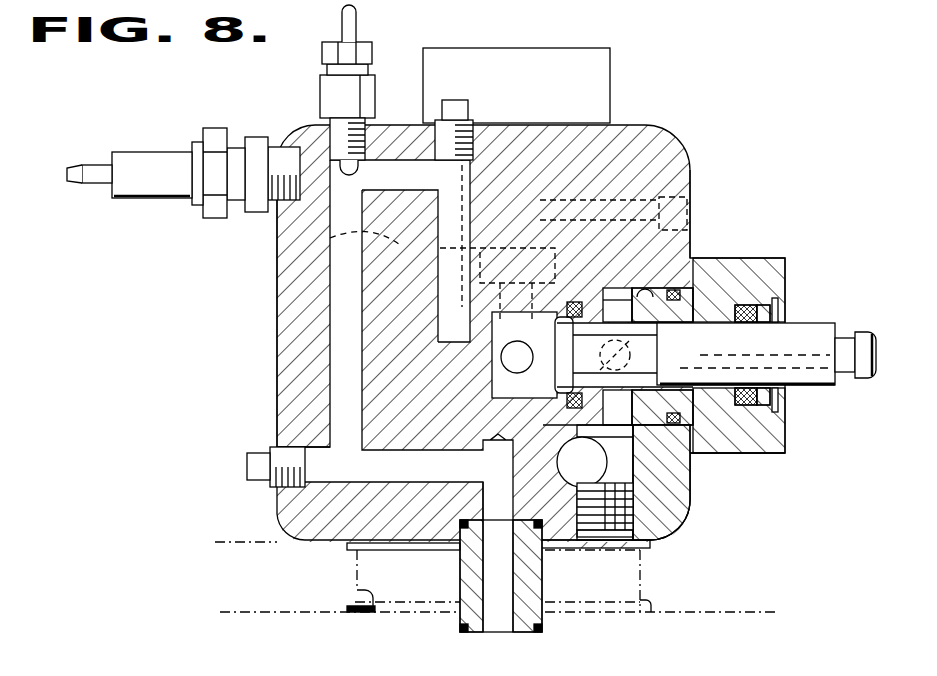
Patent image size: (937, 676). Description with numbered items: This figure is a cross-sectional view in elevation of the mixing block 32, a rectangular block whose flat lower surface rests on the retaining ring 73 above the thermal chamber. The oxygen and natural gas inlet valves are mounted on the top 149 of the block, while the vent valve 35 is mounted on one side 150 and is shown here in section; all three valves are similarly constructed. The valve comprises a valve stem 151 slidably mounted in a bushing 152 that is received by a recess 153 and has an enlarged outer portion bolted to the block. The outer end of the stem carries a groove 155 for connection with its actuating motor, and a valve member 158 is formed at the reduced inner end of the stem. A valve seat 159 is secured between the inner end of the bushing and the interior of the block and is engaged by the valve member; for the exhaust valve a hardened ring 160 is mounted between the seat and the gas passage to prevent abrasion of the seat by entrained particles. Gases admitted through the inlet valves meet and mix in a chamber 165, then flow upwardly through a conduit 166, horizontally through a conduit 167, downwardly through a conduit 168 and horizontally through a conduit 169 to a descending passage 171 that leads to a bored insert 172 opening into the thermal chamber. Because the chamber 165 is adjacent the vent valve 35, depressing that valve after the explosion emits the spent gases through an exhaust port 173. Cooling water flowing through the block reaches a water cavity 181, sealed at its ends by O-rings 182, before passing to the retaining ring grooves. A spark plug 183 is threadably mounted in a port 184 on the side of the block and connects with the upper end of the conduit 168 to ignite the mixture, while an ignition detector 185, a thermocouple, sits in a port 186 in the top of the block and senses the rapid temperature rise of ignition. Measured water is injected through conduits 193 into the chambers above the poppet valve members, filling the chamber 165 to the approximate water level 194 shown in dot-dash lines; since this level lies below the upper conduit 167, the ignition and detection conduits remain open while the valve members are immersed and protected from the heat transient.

The mixing block 32 is at (268, 364).
The vent valve 35 is at (745, 463).
The retaining ring 73 is at (713, 552).
The top of block 149 is at (640, 135).
The side of block 150 is at (690, 172).
The valve stem 151 is at (805, 325).
The bushing 152 is at (760, 258).
The recess 153 is at (690, 228).
The groove 155 is at (848, 384).
The valve member 158 is at (560, 378).
The valve seat 159 is at (565, 408).
The hardened ring 160 is at (571, 302).
The chamber 165 is at (478, 380).
The conduit 166 is at (440, 282).
The conduit 167 is at (383, 165).
The conduit 168 is at (330, 290).
The conduit 169 is at (372, 478).
The descending passage 171 is at (462, 543).
The bored insert 172 is at (475, 628).
The exhaust port 173 is at (640, 350).
The water cavity 181 is at (362, 608).
The O-rings 182 is at (650, 600).
The spark plug 183 is at (146, 197).
The port 184 is at (297, 155).
The ignition detector 185 is at (375, 80).
The port 186 is at (330, 128).
The conduits 193 is at (585, 195).
The water level 194 is at (330, 238).